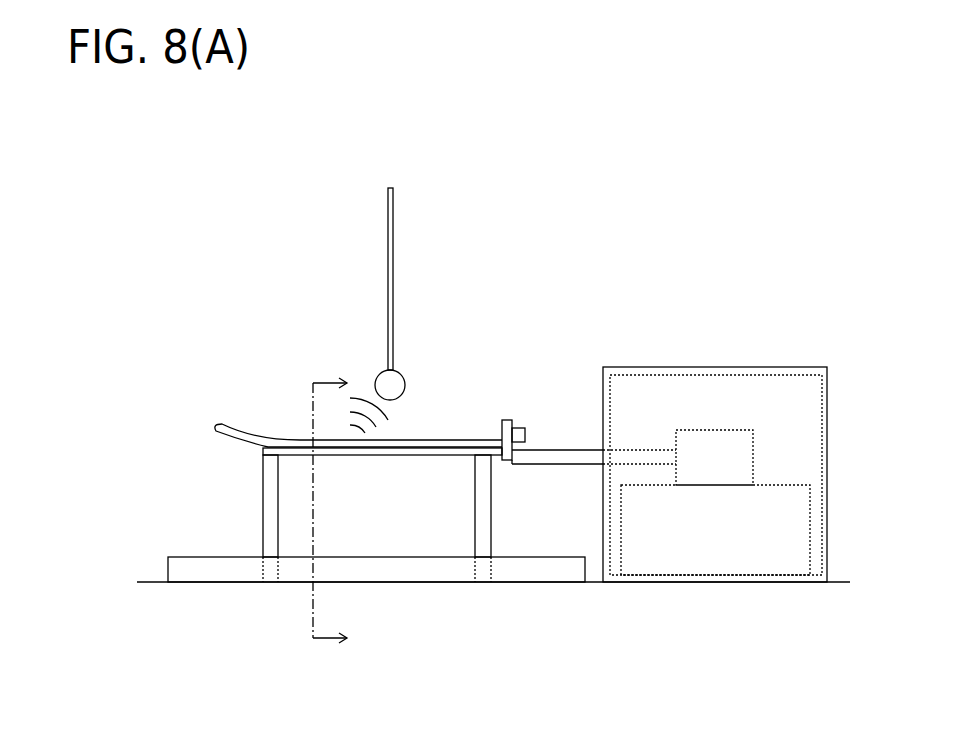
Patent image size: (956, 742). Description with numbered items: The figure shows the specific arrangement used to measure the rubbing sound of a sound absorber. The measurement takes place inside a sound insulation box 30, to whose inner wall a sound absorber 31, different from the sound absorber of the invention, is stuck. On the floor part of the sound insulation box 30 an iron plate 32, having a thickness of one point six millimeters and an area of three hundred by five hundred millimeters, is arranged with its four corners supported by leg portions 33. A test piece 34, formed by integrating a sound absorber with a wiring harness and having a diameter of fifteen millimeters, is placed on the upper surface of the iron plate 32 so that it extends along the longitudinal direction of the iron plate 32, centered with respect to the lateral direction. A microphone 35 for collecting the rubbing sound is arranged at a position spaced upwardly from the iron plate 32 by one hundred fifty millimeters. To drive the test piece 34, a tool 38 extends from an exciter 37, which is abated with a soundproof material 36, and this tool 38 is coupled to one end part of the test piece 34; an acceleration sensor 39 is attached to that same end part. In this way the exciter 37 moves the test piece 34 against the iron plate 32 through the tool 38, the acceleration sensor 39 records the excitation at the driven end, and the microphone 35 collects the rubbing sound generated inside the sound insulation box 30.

The sound insulation box 30 is at (242, 224).
The sound absorber 31 is at (415, 557).
The iron plate 32 is at (380, 456).
The leg portions 33 is at (263, 516).
The test piece 34 is at (451, 440).
The microphone 35 is at (404, 372).
The soundproof material 36 is at (796, 367).
The exciter 37 is at (710, 430).
The tool 38 is at (648, 450).
The acceleration sensor 39 is at (512, 420).